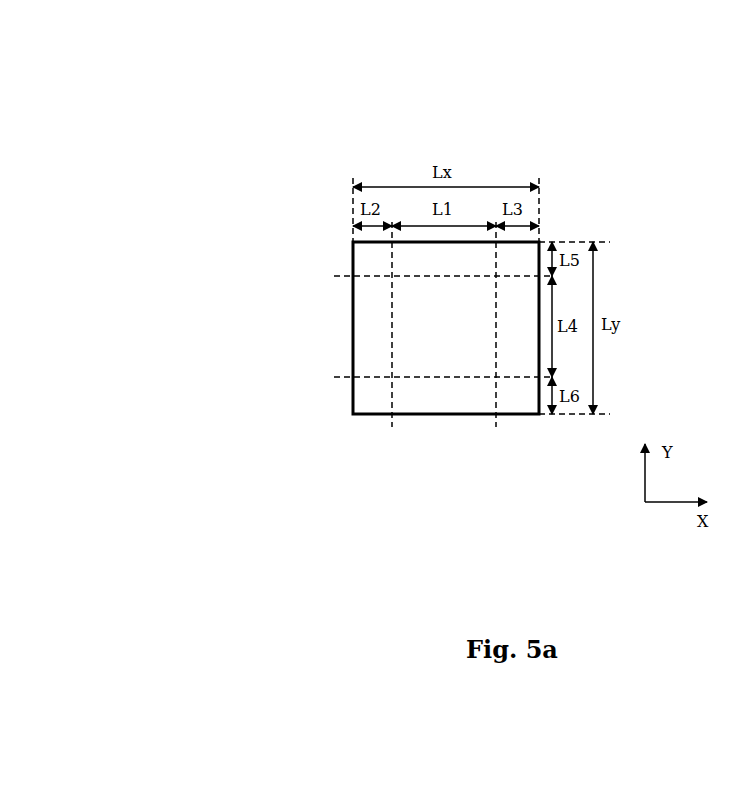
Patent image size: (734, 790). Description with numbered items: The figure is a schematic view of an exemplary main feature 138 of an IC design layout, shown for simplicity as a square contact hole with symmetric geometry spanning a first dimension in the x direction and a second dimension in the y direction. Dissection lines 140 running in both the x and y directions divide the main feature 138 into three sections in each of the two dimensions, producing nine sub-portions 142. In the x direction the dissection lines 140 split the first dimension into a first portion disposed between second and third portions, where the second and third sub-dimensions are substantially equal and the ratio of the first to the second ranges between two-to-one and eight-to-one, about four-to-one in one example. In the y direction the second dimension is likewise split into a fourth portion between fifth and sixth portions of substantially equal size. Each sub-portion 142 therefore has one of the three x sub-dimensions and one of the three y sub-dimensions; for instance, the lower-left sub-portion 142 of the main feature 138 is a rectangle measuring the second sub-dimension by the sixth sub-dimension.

The main feature 138 is at (562, 114).
The dissection lines 140 is at (338, 277).
The sub-portions 142 is at (364, 318).